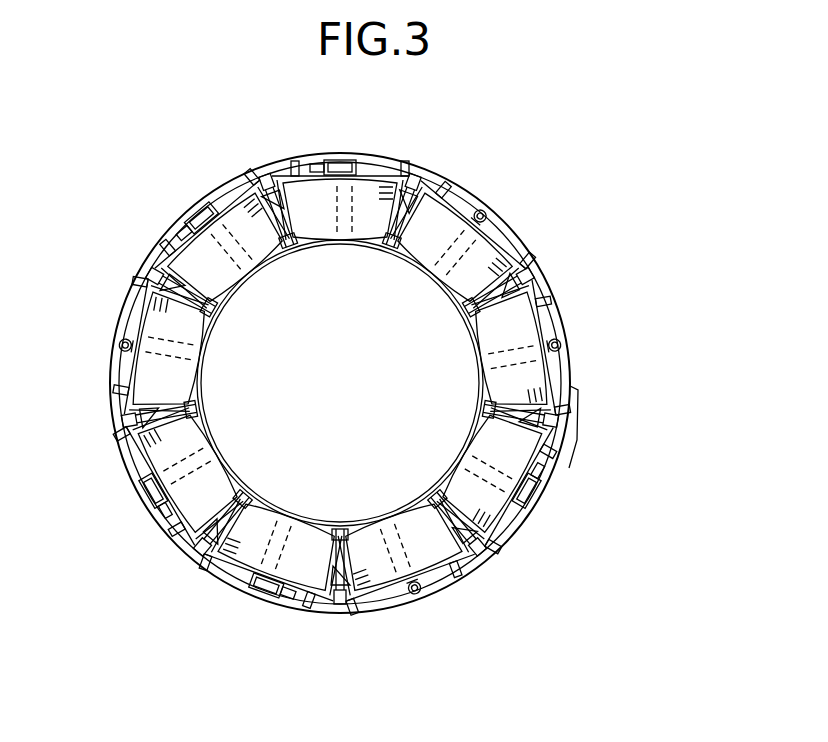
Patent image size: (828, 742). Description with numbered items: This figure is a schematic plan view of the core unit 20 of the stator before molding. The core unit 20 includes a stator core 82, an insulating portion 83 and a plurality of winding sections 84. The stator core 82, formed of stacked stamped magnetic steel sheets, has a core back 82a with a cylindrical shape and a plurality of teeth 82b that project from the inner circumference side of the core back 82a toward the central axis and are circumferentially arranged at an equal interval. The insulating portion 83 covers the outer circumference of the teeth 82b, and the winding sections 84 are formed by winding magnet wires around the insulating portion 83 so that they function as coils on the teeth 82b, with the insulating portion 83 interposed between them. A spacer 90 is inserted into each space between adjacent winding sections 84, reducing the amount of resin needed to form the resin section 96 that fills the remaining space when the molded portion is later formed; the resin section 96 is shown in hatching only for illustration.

The core unit 20 is at (614, 157).
The stator core 82 is at (560, 290).
The core back 82a is at (559, 322).
The teeth 82b is at (547, 359).
The insulating portion 83 is at (442, 590).
The winding sections 84 is at (548, 378).
The spacer 90 is at (553, 410).
The resin section 96 is at (557, 433).